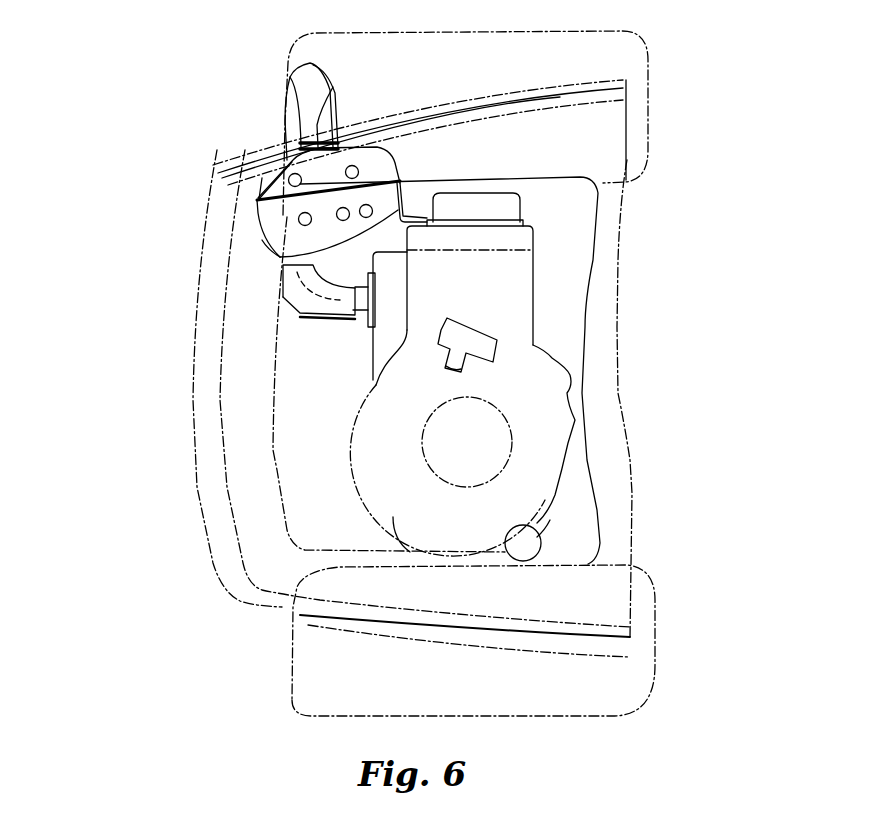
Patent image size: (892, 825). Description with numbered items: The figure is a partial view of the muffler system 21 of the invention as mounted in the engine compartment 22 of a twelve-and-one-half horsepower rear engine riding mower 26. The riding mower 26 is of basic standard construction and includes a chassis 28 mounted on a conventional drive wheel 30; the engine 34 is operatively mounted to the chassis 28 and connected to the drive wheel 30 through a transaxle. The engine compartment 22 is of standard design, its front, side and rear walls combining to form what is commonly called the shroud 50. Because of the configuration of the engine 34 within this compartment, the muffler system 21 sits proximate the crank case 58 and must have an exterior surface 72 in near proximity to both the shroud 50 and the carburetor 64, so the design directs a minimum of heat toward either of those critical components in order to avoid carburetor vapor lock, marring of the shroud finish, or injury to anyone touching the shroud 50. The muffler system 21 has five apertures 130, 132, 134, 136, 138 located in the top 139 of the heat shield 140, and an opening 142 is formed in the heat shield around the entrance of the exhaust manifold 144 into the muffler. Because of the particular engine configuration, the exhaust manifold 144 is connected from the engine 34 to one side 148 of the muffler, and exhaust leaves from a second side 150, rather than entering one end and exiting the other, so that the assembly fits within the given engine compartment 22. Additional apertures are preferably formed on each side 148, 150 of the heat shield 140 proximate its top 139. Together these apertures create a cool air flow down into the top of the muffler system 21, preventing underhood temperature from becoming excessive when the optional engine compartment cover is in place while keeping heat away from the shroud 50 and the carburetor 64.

The muffler system 21 is at (255, 170).
The engine compartment 22 is at (290, 357).
The riding mower 26 is at (640, 265).
The chassis 28 is at (600, 128).
The drive wheel 30 is at (632, 30).
The engine 34 is at (553, 345).
The shroud 50 is at (237, 170).
The crank case 58 is at (410, 552).
The carburetor 64 is at (360, 360).
The exterior surface 72 is at (365, 146).
The aperture 130 is at (288, 181).
The aperture 132 is at (381, 172).
The aperture 134 is at (400, 200).
The aperture 136 is at (276, 256).
The aperture 138 is at (299, 220).
The top 139 is at (359, 170).
The heat shield 140 is at (255, 241).
The opening 142 is at (280, 286).
The exhaust manifold 144 is at (368, 312).
The side 148 is at (277, 258).
The side 150 is at (313, 112).